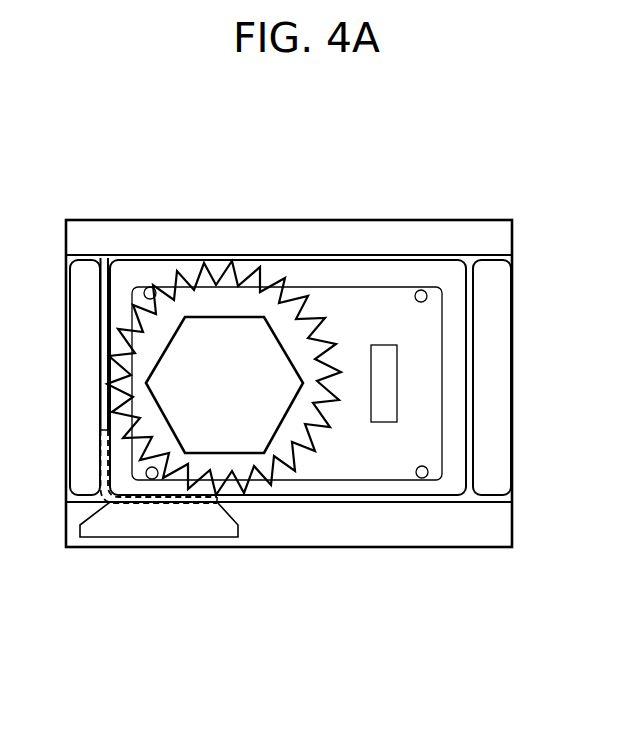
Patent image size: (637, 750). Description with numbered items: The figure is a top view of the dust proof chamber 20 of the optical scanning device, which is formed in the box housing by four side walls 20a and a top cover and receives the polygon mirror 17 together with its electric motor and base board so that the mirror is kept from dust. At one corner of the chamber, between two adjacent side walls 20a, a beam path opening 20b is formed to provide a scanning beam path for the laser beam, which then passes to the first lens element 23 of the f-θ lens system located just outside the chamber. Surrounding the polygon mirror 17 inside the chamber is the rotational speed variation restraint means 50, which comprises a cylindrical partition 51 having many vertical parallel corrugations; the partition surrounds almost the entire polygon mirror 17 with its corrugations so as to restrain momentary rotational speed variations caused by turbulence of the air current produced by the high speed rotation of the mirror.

The polygon mirror 17 is at (242, 397).
The dust proof chamber 20 is at (378, 274).
The side walls 20a is at (303, 256).
The beam path opening 20b is at (100, 482).
The first lens element 23 is at (100, 538).
The rotational speed variation restraint means 50 is at (240, 254).
The cylindrical partition 51 is at (160, 280).